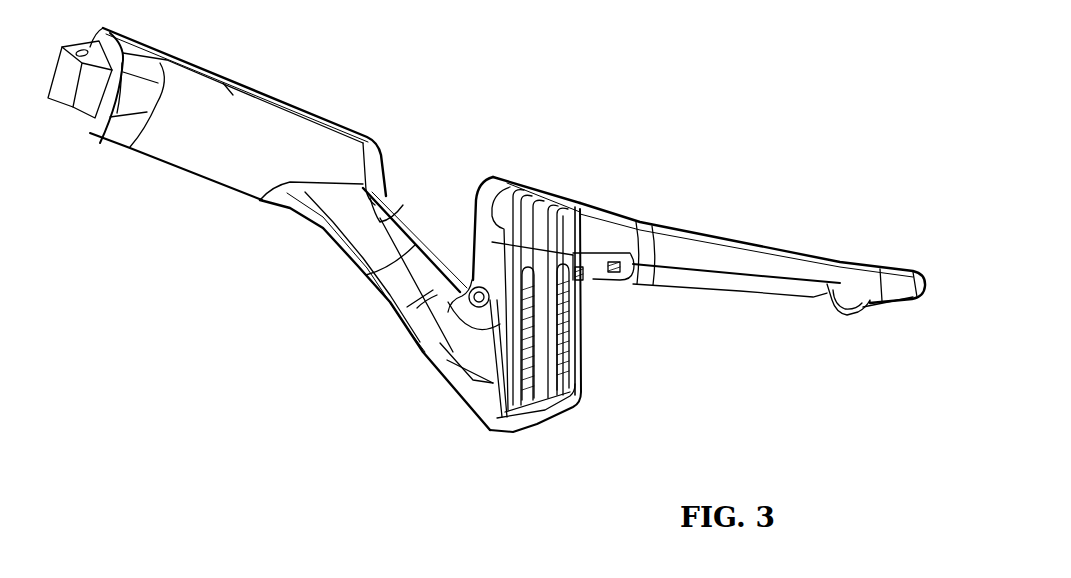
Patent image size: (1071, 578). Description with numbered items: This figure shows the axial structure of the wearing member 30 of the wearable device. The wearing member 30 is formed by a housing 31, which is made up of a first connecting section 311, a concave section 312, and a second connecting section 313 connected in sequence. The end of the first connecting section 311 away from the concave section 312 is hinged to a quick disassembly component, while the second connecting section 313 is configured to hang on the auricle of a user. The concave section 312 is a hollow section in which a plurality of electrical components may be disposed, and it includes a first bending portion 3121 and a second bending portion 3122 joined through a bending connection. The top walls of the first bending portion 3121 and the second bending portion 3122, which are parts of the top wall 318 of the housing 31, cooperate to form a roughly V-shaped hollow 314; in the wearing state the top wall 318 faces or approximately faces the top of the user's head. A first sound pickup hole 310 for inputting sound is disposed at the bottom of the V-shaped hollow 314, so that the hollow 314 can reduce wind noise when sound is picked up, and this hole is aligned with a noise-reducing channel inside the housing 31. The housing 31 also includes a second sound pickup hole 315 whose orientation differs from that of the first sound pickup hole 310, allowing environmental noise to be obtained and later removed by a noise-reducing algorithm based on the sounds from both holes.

The wearing member 30 is at (243, 25).
The housing 31 is at (308, 102).
The first sound pickup hole 310 is at (478, 272).
The first connecting section 311 is at (197, 150).
The concave section 312 is at (498, 517).
The first bending portion 3121 is at (420, 313).
The second bending portion 3122 is at (523, 427).
The second connecting section 313 is at (740, 267).
The hollow 314 is at (444, 198).
The second sound pickup hole 315 is at (620, 282).
The top wall 318 is at (663, 230).